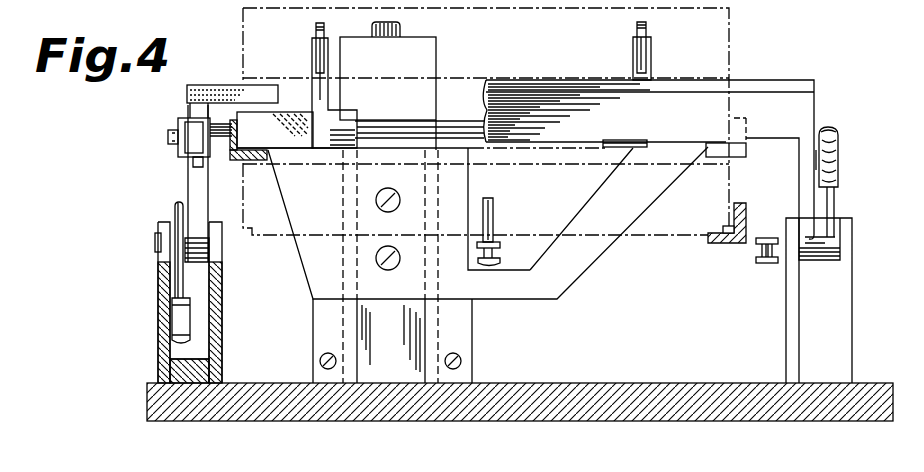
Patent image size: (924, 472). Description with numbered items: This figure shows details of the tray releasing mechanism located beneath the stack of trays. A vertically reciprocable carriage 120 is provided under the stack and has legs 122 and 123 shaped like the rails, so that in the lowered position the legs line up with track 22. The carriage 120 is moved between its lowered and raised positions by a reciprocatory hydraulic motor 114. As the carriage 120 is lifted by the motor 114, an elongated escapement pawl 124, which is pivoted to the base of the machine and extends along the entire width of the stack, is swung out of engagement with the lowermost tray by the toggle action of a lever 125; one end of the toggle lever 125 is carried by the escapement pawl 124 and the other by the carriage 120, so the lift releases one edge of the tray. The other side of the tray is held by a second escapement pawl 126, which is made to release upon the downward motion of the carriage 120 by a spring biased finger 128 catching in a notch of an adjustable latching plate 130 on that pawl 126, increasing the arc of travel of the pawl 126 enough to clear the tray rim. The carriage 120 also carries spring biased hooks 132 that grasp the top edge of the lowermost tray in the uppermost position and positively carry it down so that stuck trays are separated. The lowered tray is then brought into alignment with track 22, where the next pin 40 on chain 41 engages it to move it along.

The track 22 is at (726, 240).
The pin 40 is at (494, 211).
The chain 41 is at (500, 246).
The reciprocatory hydraulic motor 114 is at (468, 330).
The vertically reciprocable carriage 120 is at (594, 276).
The leg 122 is at (742, 158).
The leg 123 is at (235, 156).
The escapement pawl 124 is at (745, 82).
The toggle lever 125 is at (836, 200).
The escapement pawl 126 is at (192, 97).
The spring biased finger 128 is at (200, 137).
The adjustable latching plate 130 is at (182, 152).
The spring biased hook 132 is at (318, 52).